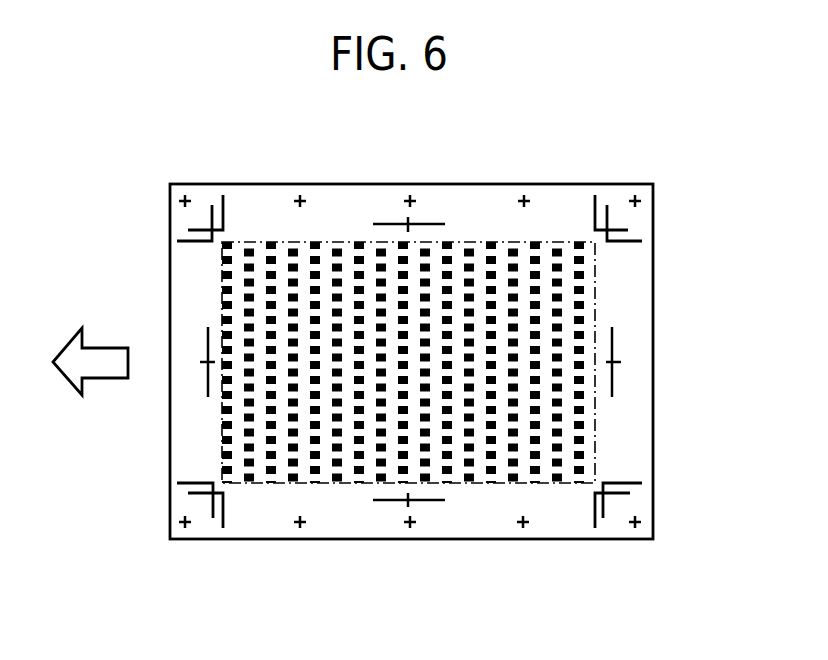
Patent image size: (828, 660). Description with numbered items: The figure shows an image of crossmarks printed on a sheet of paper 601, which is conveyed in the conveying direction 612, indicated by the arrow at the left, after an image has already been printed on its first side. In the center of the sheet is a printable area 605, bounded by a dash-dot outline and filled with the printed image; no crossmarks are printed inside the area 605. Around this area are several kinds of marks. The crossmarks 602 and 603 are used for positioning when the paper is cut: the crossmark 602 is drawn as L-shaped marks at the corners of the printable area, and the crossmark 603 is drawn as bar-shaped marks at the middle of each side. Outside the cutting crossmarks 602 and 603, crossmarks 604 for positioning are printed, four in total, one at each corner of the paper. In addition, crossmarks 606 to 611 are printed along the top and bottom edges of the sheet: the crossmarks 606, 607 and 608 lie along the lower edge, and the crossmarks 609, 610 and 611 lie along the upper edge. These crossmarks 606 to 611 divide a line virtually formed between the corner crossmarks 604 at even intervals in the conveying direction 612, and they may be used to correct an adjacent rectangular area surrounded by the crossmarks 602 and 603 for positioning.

The paper 601 is at (653, 345).
The crossmark for cutting 602 is at (224, 520).
The crossmark for cutting 603 is at (425, 500).
The crossmark for positioning 604 is at (635, 527).
The printable area 605 is at (541, 241).
The crossmark 606 is at (300, 527).
The crossmark 607 is at (408, 527).
The crossmark 608 is at (522, 527).
The crossmark 609 is at (300, 196).
The crossmark 610 is at (410, 196).
The crossmark 611 is at (525, 196).
The conveying direction 612 is at (100, 348).